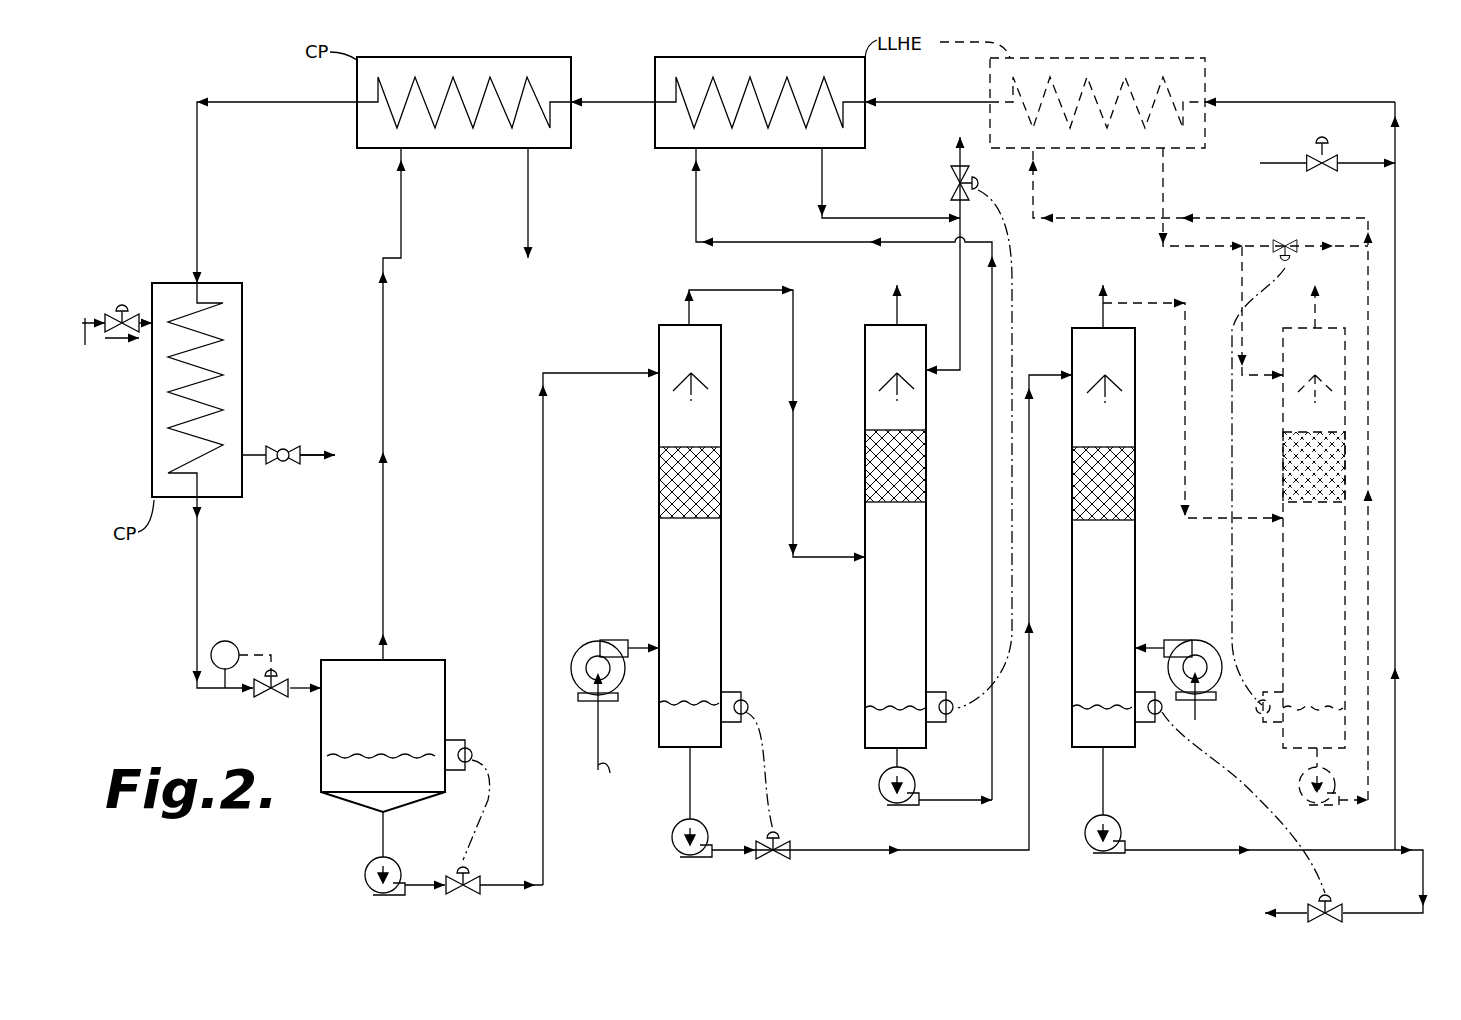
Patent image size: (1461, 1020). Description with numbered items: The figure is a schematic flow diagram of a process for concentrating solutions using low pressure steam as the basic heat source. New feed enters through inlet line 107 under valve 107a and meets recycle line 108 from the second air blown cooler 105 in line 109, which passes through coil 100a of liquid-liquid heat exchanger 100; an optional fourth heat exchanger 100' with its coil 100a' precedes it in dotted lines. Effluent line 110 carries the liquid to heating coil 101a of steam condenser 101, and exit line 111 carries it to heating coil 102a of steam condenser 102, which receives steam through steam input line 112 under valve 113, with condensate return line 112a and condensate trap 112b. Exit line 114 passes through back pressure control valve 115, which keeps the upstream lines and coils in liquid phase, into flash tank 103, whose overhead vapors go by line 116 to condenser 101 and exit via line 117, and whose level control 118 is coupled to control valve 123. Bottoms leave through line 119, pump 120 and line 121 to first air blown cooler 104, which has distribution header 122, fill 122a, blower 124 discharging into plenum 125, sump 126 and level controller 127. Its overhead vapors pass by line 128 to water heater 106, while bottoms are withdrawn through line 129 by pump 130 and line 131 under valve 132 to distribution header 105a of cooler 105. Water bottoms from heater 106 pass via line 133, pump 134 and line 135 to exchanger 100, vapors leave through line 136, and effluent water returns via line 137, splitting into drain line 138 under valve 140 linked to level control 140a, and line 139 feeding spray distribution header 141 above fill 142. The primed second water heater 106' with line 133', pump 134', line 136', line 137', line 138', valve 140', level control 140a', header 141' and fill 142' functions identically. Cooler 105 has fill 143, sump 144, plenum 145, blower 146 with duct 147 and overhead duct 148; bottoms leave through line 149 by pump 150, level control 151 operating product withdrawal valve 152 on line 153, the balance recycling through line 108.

The liquid-liquid heat exchanger 100 is at (760, 90).
The coil 100a is at (760, 129).
The fourth heat exchanger 100' is at (1097, 90).
The coil 100a' is at (1097, 128).
The steam condenser 101 is at (472, 52).
The heating coil 101a is at (467, 107).
The steam condenser 102 is at (224, 282).
The heating coil 102a is at (222, 347).
The flash tank 103 is at (422, 660).
The first air blown cooler 104 is at (664, 324).
The second air blown cooler 105 is at (1139, 328).
The distribution header 105a is at (1118, 372).
The water heater 106 is at (878, 524).
The second water heater 106' is at (1304, 497).
The inlet line 107 is at (1280, 165).
The valve 107a is at (1324, 172).
The recycle line 108 is at (1395, 210).
The line 109 is at (939, 100).
The effluent line 110 is at (619, 106).
The exit line 111 is at (270, 84).
The steam input line 112 is at (130, 333).
The condensate return line 112a is at (266, 448).
The condensate trap 112b is at (285, 462).
The valve 113 is at (122, 304).
The exit line 114 is at (197, 583).
The back pressure control valve 115 is at (272, 704).
The line 116 is at (383, 395).
The line 117 is at (528, 218).
The level control 118 is at (472, 750).
The line 119 is at (383, 833).
The pump 120 is at (366, 884).
The line 121 is at (543, 486).
The distribution header 122 is at (700, 366).
The fill 122a is at (719, 447).
The control valve 123 is at (466, 898).
The blower 124 is at (596, 640).
The plenum 125 is at (710, 538).
The sump 126 is at (660, 730).
The level controller 127 is at (745, 698).
The line 128 is at (740, 270).
The line 129 is at (690, 789).
The pump 130 is at (676, 844).
The line 131 is at (846, 852).
The valve 132 is at (773, 860).
The line 133 is at (865, 762).
The line 133' is at (1341, 762).
The pump 134 is at (918, 794).
The pump 134' is at (1307, 786).
The line 135 is at (992, 484).
The line 136 is at (922, 305).
The line 136' is at (1289, 306).
The line 137 is at (889, 185).
The line 137' is at (1240, 199).
The line 138 is at (933, 177).
The line 138' is at (1308, 237).
The line 139 is at (960, 274).
The valve 140 is at (990, 172).
The valve 140' is at (1309, 261).
The level control 140a is at (969, 456).
The level control 140a' is at (1251, 507).
The spray distribution header 141 is at (894, 373).
The spray distribution header 141' is at (1312, 374).
The fill 142 is at (871, 466).
The fill 142' is at (1292, 467).
The fill 143 is at (1078, 452).
The sump 144 is at (1081, 747).
The plenum 145 is at (1135, 585).
The blower 146 is at (1205, 641).
The duct 147 is at (1152, 646).
The duct 148 is at (1103, 313).
The line 149 is at (1103, 793).
The pump 150 is at (1105, 844).
The level control 151 is at (1158, 716).
The product withdrawal valve 152 is at (1324, 924).
The line 153 is at (1318, 897).